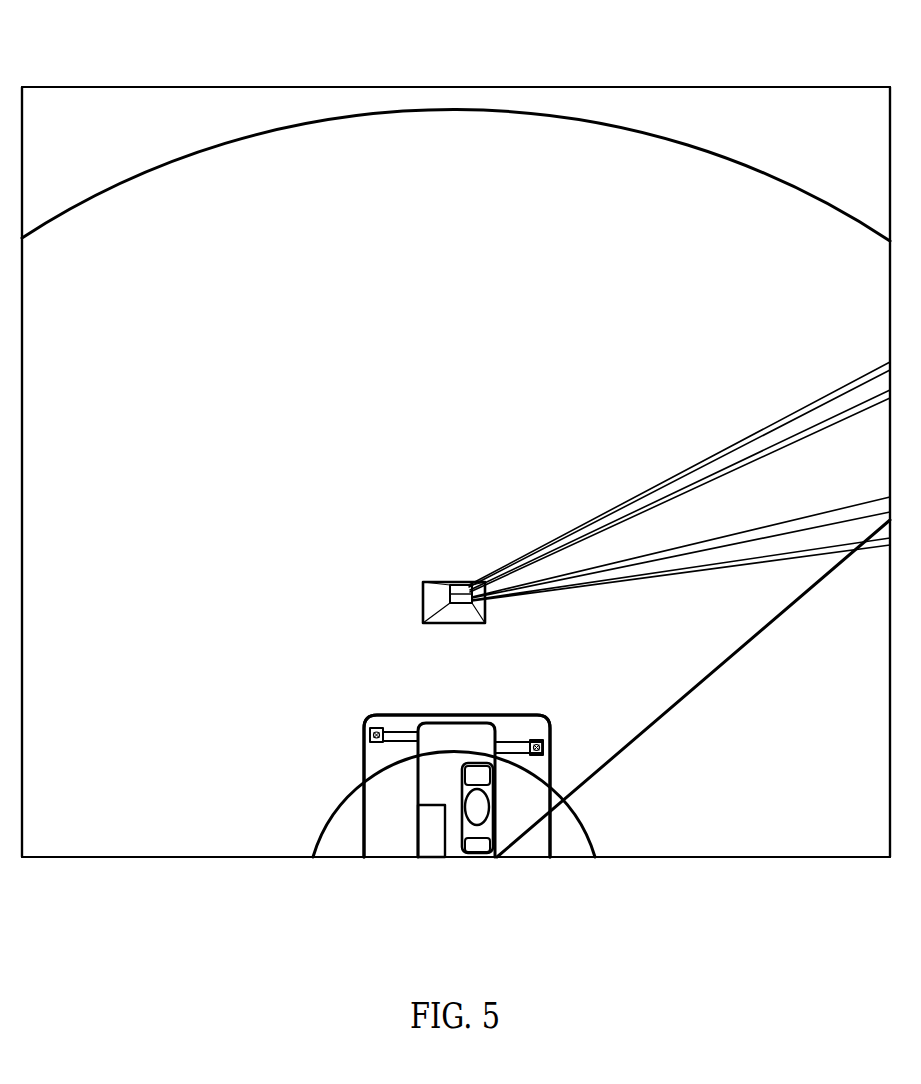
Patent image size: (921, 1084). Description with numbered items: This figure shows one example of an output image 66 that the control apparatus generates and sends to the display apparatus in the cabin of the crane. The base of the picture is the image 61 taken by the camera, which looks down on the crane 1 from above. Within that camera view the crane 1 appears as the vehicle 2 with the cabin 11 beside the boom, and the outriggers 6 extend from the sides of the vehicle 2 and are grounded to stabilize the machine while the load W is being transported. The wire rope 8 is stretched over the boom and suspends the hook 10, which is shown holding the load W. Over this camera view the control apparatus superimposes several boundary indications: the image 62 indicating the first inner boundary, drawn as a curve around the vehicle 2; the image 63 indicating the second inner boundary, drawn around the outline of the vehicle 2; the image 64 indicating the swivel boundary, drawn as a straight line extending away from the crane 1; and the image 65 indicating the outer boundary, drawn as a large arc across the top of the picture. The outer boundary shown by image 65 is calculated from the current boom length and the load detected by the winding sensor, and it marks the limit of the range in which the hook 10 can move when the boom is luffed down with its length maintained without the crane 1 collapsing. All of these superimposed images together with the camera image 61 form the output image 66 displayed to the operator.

The crane 1 is at (502, 732).
The vehicle 2 is at (457, 723).
The outrigger 6 is at (522, 740).
The wire rope 8 is at (633, 580).
The hook 10 is at (443, 624).
The load W is at (474, 624).
The cabin 11 is at (462, 798).
The image taken by camera 61 is at (155, 100).
The image indicating first inner boundary 62 is at (328, 818).
The image indicating second inner boundary 63 is at (390, 715).
The image indicating swivel boundary 64 is at (727, 662).
The image indicating outer boundary 65 is at (157, 167).
The output image 66 is at (80, 82).